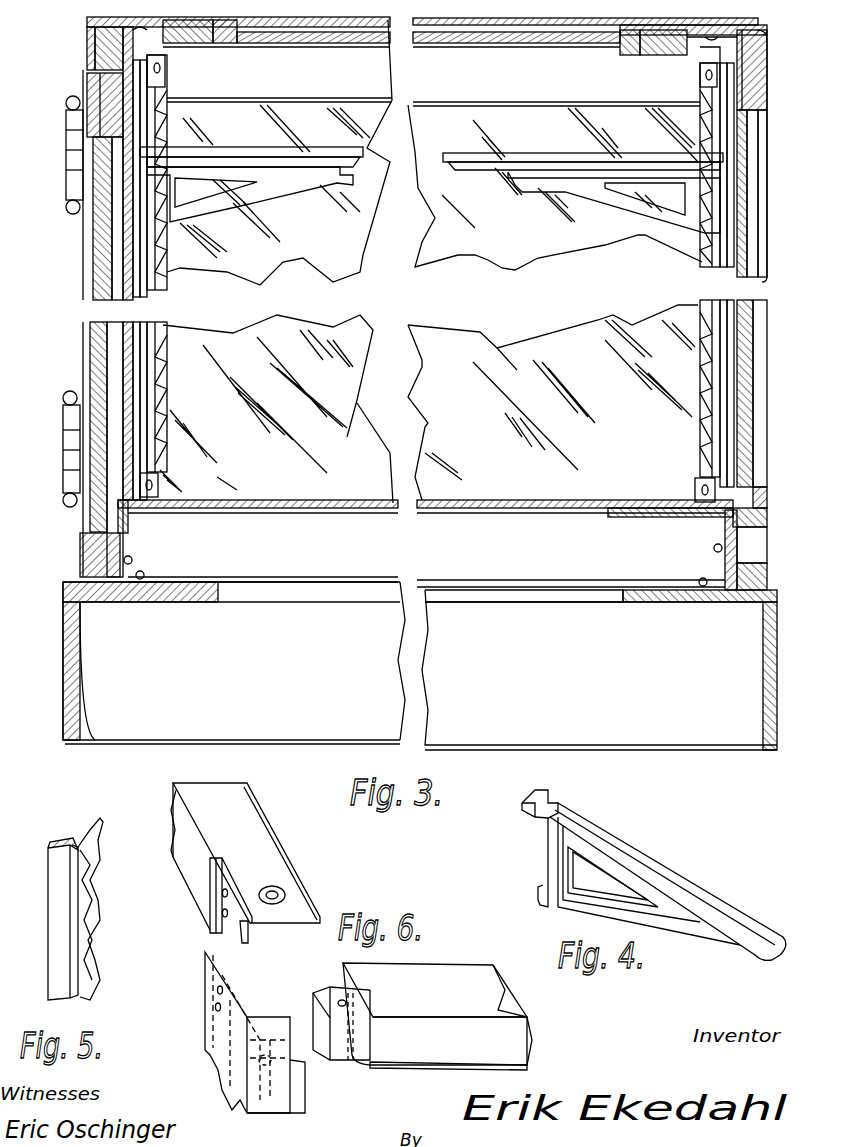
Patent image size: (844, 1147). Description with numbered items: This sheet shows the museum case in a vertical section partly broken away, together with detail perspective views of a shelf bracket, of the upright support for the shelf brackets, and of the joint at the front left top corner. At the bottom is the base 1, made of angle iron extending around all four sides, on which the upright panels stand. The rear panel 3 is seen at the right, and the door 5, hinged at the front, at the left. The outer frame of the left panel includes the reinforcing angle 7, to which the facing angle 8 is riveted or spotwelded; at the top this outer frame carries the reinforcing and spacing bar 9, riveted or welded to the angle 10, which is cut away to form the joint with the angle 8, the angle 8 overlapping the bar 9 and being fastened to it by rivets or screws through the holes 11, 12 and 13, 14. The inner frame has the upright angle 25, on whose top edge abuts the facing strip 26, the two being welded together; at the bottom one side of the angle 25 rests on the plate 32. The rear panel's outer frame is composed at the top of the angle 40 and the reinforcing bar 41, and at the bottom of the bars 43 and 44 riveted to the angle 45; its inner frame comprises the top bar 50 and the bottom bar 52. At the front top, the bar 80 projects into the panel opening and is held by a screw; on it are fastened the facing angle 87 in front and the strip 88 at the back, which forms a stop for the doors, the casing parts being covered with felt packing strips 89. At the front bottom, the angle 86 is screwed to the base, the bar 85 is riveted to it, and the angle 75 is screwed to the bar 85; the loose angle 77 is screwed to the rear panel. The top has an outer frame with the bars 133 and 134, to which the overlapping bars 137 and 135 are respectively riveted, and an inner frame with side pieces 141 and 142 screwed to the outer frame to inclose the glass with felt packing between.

In FIG. 3, the base 1 is at (63, 600).
In FIG. 3, the rear panel 3 is at (758, 345).
In FIG. 3, the door 5 is at (105, 240).
In FIG. 6, the reinforcing angle 7 is at (280, 1113).
In FIG. 6, the facing angle 8 is at (245, 1010).
In FIG. 6, the reinforcing and spacing bar 9 is at (210, 927).
In FIG. 6, the angle 10 is at (262, 823).
In FIG. 6, the hole 11 is at (222, 891).
In FIG. 6, the hole 12 is at (222, 911).
In FIG. 6, the hole 13 is at (217, 990).
In FIG. 6, the hole 14 is at (215, 1007).
In FIG. 6, the upright angle 25 is at (305, 1096).
In FIG. 6, the facing strip 26 is at (250, 940).
In FIG. 3, the plate 32 is at (560, 500).
In FIG. 3, the angle 40 is at (768, 47).
In FIG. 3, the reinforcing bar 41 is at (768, 73).
In FIG. 3, the bar 43 is at (765, 518).
In FIG. 3, the bar 44 is at (758, 575).
In FIG. 3, the angle 45 is at (762, 503).
In FIG. 3, the bar 50 is at (735, 50).
In FIG. 3, the bar 52 is at (695, 488).
In FIG. 3, the angle 75 is at (128, 533).
In FIG. 3, the angle 77 is at (727, 527).
In FIG. 3, the bar 80 is at (92, 30).
In FIG. 6, the bar 80 is at (322, 992).
In FIG. 3, the bar 85 is at (132, 562).
In FIG. 3, the angle 86 is at (82, 548).
In FIG. 3, the facing angle 87 is at (88, 50).
In FIG. 6, the facing angle 87 is at (465, 965).
In FIG. 3, the strip 88 is at (135, 44).
In FIG. 6, the strip 88 is at (366, 1070).
In FIG. 3, the felt packing strip 89 is at (87, 86).
In FIG. 3, the bar 133 is at (213, 17).
In FIG. 3, the bar 134 is at (640, 14).
In FIG. 3, the bar 135 is at (660, 55).
In FIG. 3, the bar 137 is at (188, 42).
In FIG. 3, the side piece 141 is at (628, 55).
In FIG. 3, the side piece 142 is at (226, 42).